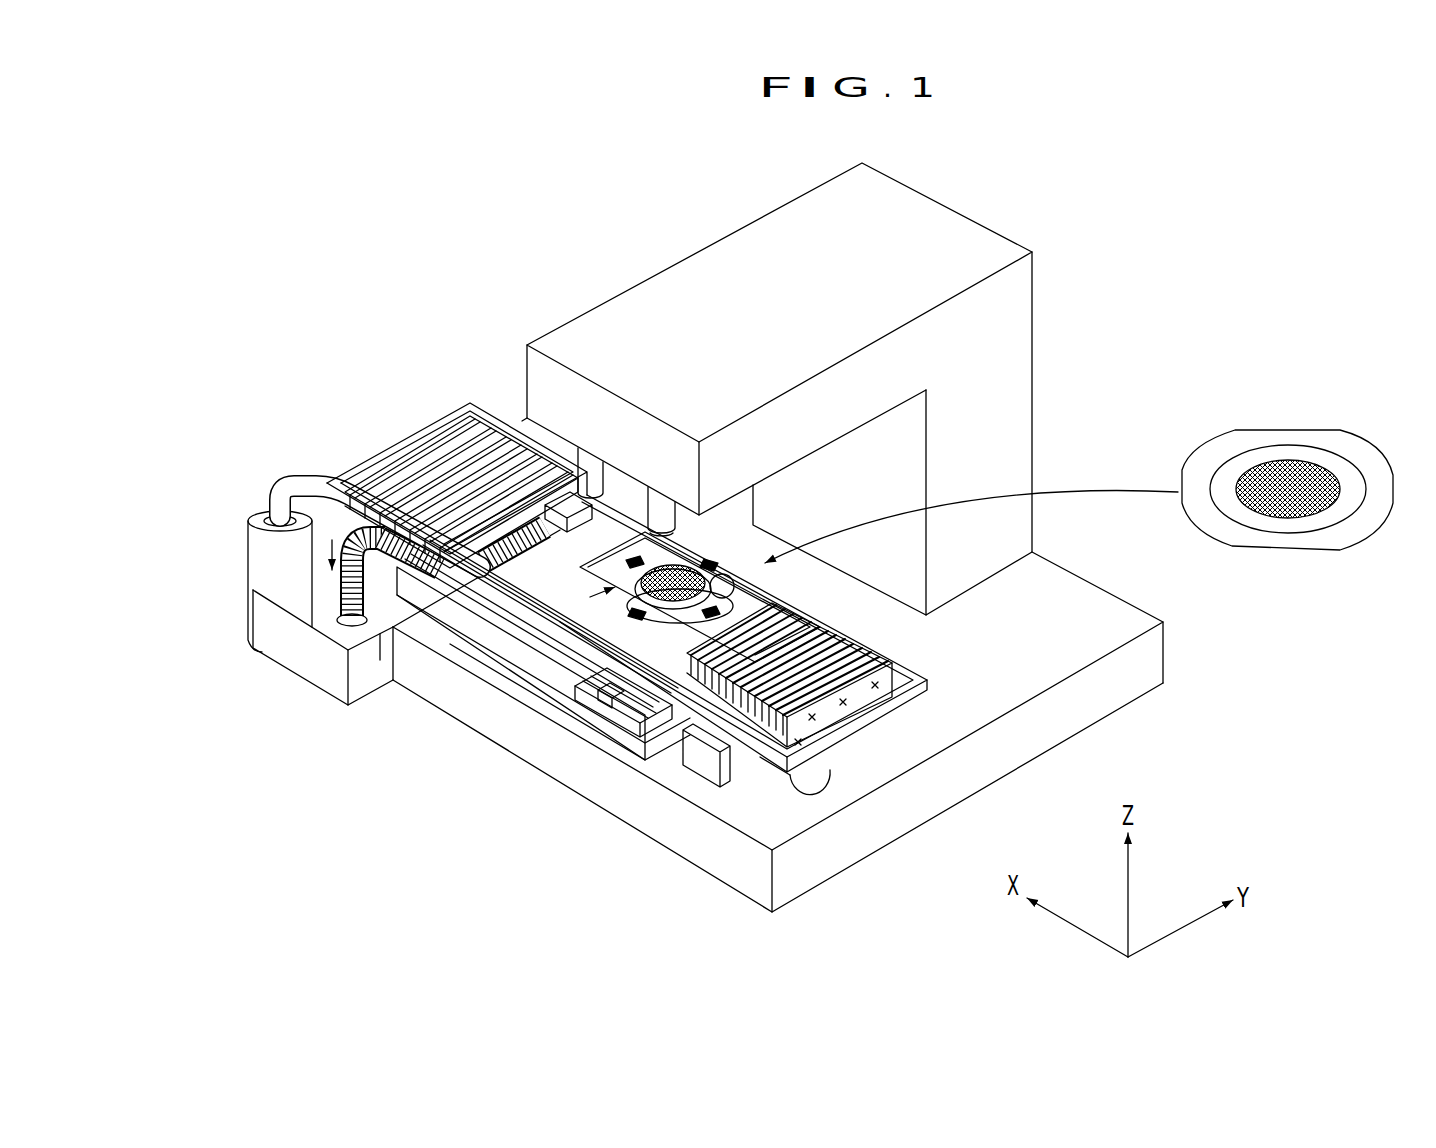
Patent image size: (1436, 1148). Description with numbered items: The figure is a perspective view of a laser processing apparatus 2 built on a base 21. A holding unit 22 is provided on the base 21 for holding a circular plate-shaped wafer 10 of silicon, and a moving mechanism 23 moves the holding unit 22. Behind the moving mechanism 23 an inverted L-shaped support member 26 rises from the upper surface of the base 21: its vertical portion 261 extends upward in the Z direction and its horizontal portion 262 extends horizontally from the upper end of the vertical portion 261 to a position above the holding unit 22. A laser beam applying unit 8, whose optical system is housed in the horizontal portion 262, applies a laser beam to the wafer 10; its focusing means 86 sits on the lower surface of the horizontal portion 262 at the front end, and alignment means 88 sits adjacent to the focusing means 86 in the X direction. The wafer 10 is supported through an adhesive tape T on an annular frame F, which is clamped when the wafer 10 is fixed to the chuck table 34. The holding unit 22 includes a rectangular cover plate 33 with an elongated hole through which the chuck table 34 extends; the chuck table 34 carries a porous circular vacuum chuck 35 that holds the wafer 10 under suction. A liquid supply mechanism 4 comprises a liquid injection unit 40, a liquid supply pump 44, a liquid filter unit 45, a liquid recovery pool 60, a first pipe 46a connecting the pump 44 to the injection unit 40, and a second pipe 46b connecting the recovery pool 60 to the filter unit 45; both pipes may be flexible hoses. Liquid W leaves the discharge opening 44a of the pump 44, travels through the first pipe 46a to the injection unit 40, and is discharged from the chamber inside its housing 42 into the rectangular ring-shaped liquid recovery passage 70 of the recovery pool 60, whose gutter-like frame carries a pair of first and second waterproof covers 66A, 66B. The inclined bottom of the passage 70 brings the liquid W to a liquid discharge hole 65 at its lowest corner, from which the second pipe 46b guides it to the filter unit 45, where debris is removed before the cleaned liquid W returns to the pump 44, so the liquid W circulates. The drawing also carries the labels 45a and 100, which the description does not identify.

The laser processing apparatus 2 is at (622, 255).
The support member 26 is at (1118, 207).
The horizontal portion 262 is at (990, 245).
The vertical portion 261 is at (1015, 290).
The laser beam applying unit 8 is at (517, 418).
The base 21 is at (1090, 600).
The liquid filter unit 45 is at (358, 692).
The side face of support block 45a is at (383, 660).
The liquid supply mechanism 4 is at (254, 462).
The liquid supply pump 44 is at (258, 578).
The discharge opening 44a is at (262, 524).
The first pipe 46a is at (312, 482).
The second pipe 46b is at (348, 626).
The liquid recovery pool 60 is at (420, 432).
The liquid discharge hole 65 is at (360, 485).
The second waterproof cover 66B is at (450, 430).
The dust collecting cover 100 is at (457, 452).
The first waterproof cover 66A is at (812, 612).
The liquid injection unit 40 is at (540, 620).
The liquid W is at (582, 602).
The holding unit 22 is at (592, 730).
The chuck table 34 is at (530, 662).
The vacuum chuck 35 is at (560, 652).
The cover plate 33 is at (677, 735).
The liquid recovery passage 70 is at (733, 736).
The moving mechanism 23 is at (850, 775).
The focusing means 86 is at (596, 480).
The housing 42 is at (640, 500).
The alignment means 88 is at (676, 525).
The annular frame F is at (1352, 441).
The adhesive tape T is at (1247, 467).
The wafer 10 is at (1290, 462).